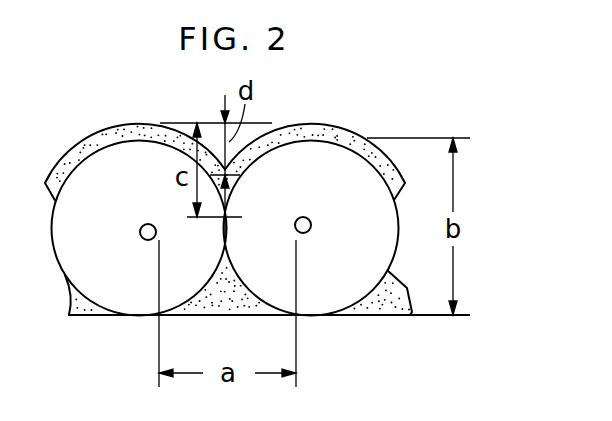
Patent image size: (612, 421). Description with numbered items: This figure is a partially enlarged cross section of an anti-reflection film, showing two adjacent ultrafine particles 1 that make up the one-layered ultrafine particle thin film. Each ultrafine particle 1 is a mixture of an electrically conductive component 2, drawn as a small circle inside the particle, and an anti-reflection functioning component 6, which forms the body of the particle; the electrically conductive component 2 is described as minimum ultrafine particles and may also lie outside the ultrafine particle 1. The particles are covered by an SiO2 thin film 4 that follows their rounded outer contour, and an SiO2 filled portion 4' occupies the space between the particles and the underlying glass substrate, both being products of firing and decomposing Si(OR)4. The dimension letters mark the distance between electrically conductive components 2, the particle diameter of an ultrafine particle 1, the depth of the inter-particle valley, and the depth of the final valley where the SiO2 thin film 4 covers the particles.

The ultrafine particle 1 is at (393, 234).
The electrically conductive component 2 is at (141, 233).
The SiO2 thin film 4 is at (257, 195).
The SiO2 filled portion 4' is at (269, 343).
The anti-reflection functioning component 6 is at (66, 263).